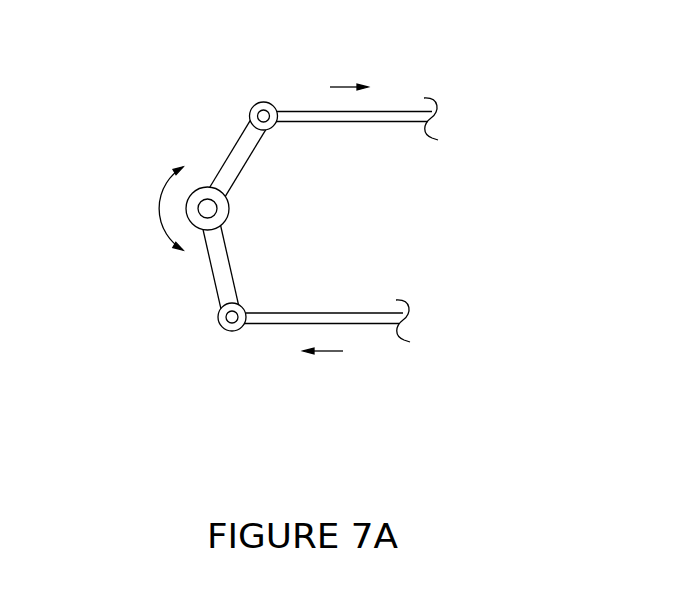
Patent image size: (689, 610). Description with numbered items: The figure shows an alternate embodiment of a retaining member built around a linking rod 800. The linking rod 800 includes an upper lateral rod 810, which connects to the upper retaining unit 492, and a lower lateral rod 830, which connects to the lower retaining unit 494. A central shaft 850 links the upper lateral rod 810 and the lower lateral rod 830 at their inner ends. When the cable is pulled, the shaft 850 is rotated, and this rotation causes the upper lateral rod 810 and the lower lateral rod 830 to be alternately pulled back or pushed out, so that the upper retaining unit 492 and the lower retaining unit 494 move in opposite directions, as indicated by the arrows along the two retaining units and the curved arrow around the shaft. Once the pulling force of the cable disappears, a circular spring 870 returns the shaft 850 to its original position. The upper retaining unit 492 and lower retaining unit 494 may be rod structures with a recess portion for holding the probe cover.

The linking rod 800 is at (455, 421).
The upper lateral rod 810 is at (232, 152).
The lower lateral rod 830 is at (213, 270).
The shaft 850 is at (186, 200).
The circular spring 870 is at (223, 209).
The upper retaining unit 492 is at (398, 111).
The lower retaining unit 494 is at (360, 313).